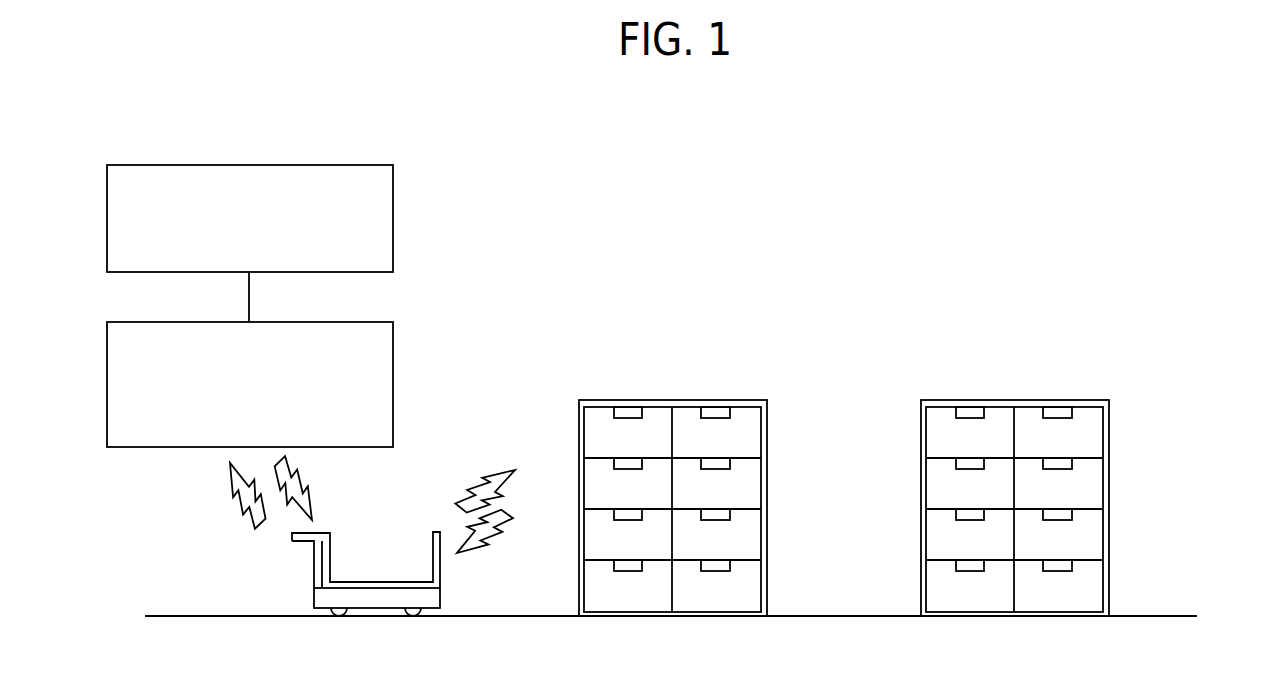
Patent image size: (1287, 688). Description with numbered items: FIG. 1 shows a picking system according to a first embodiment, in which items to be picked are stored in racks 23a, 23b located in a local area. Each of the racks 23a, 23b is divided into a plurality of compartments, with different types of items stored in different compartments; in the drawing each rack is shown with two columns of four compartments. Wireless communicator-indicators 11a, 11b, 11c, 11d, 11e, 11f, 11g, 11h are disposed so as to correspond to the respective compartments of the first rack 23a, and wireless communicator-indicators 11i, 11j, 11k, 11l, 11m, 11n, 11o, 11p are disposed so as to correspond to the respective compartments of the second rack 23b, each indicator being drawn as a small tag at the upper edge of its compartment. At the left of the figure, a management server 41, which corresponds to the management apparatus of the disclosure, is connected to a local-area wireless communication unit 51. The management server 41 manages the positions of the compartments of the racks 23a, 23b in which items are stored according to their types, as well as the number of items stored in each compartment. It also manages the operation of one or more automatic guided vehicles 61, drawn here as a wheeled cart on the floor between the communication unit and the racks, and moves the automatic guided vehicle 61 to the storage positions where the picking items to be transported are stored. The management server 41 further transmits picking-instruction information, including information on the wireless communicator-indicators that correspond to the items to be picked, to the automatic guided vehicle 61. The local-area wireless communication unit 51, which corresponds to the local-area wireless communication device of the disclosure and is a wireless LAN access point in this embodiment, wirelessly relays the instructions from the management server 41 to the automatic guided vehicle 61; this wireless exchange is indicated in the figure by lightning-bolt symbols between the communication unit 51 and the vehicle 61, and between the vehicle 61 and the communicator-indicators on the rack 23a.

The management server 41 is at (308, 164).
The local-area wireless communication unit 51 is at (308, 323).
The automatic guided vehicle 61 is at (365, 580).
The rack 23a is at (665, 400).
The rack 23b is at (1015, 464).
The wireless communicator-indicator 11a is at (627, 410).
The wireless communicator-indicator 11b is at (717, 410).
The wireless communicator-indicator 11c is at (627, 461).
The wireless communicator-indicator 11d is at (717, 461).
The wireless communicator-indicator 11e is at (627, 512).
The wireless communicator-indicator 11f is at (717, 512).
The wireless communicator-indicator 11g is at (627, 563).
The wireless communicator-indicator 11h is at (717, 563).
The wireless communicator-indicator 11i is at (929, 387).
The wireless communicator-indicator 11j is at (1096, 387).
The wireless communicator-indicator 11k is at (926, 438).
The wireless communicator-indicator 11l is at (1096, 438).
The wireless communicator-indicator 11m is at (922, 490).
The wireless communicator-indicator 11n is at (1099, 490).
The wireless communicator-indicator 11o is at (926, 541).
The wireless communicator-indicator 11p is at (1099, 541).